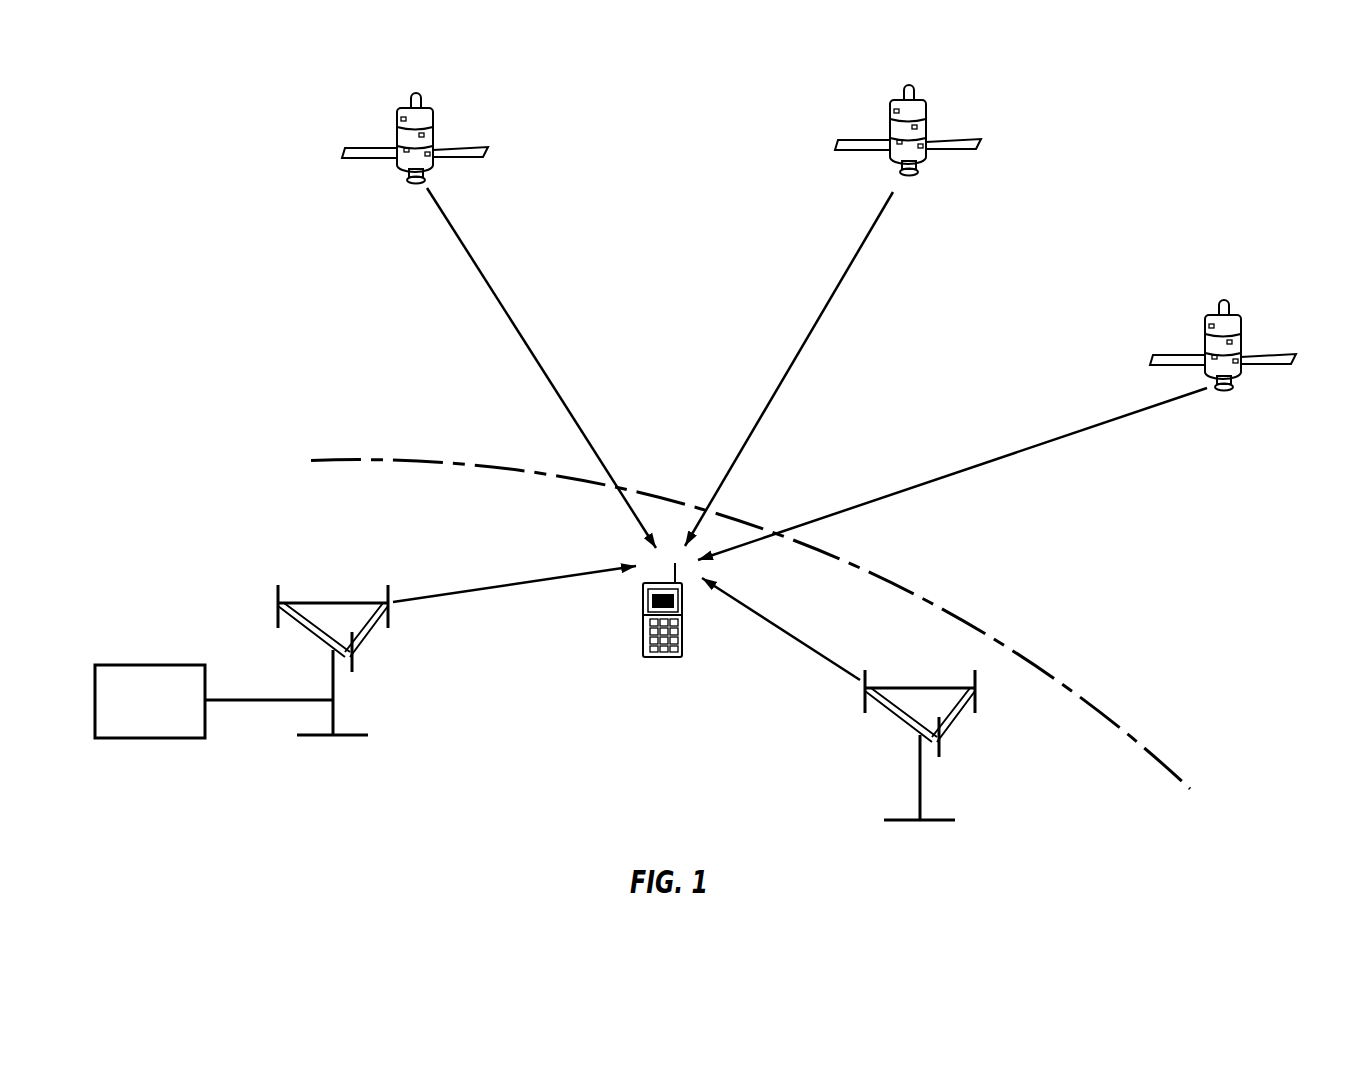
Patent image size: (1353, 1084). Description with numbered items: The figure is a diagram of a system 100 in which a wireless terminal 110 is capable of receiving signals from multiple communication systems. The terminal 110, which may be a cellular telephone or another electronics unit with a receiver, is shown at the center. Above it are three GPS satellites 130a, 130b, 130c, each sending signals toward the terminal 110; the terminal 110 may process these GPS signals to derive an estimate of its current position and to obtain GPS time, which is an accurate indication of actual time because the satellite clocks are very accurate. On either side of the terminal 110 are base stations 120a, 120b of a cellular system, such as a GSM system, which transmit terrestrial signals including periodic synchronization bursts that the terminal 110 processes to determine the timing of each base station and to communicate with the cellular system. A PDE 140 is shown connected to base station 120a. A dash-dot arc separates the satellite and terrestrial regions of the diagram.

The satellite positioning system 100 is at (186, 108).
The wireless terminal 110 is at (644, 641).
The base station 120a is at (328, 602).
The base station 120b is at (915, 688).
The GPS satellite 130a is at (478, 134).
The GPS satellite 130b is at (973, 123).
The GPS satellite 130c is at (1287, 340).
The position determination entity (PDE) 140 is at (146, 665).